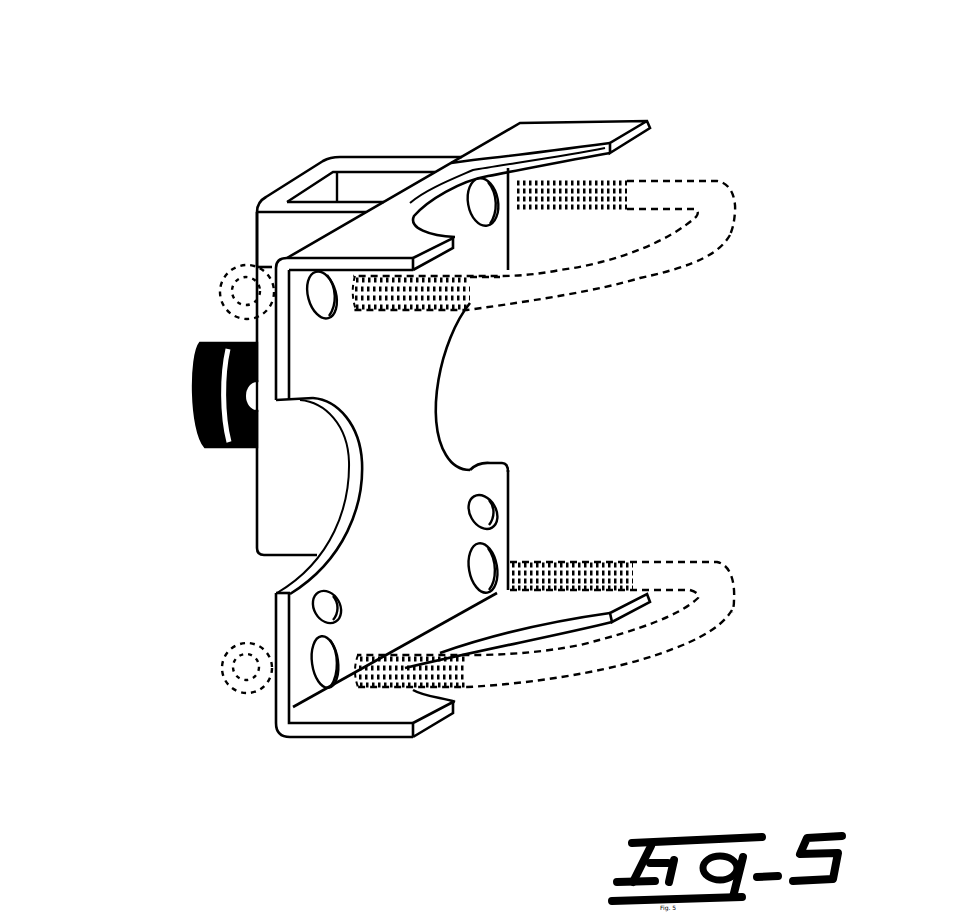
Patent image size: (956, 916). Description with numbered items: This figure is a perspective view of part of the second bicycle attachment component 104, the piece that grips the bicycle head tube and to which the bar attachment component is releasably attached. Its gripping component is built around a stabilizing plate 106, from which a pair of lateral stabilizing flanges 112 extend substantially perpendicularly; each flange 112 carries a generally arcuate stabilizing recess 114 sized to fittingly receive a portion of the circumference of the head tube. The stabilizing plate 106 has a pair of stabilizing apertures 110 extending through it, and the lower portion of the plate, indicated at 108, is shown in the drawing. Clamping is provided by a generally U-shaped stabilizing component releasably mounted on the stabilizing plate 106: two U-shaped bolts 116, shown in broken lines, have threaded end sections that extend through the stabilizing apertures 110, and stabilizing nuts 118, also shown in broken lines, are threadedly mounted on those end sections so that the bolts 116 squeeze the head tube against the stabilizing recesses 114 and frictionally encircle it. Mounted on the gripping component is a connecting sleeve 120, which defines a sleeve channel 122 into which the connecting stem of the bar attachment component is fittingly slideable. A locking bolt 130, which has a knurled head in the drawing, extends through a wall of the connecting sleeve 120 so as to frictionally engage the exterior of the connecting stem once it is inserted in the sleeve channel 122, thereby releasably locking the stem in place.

The second bicycle attachment component 104 is at (214, 235).
The stabilizing plate 106 is at (428, 408).
The tab 108 is at (480, 472).
The stabilizing apertures 110 is at (492, 205).
The lateral stabilizing flanges 112 is at (540, 136).
The stabilizing recess 114 is at (473, 164).
The U-shaped bolts 116 is at (688, 252).
The stabilizing nuts 118 is at (230, 287).
The connecting sleeve 120 is at (273, 195).
The sleeve channel 122 is at (360, 180).
The locking bolt 130 is at (192, 390).